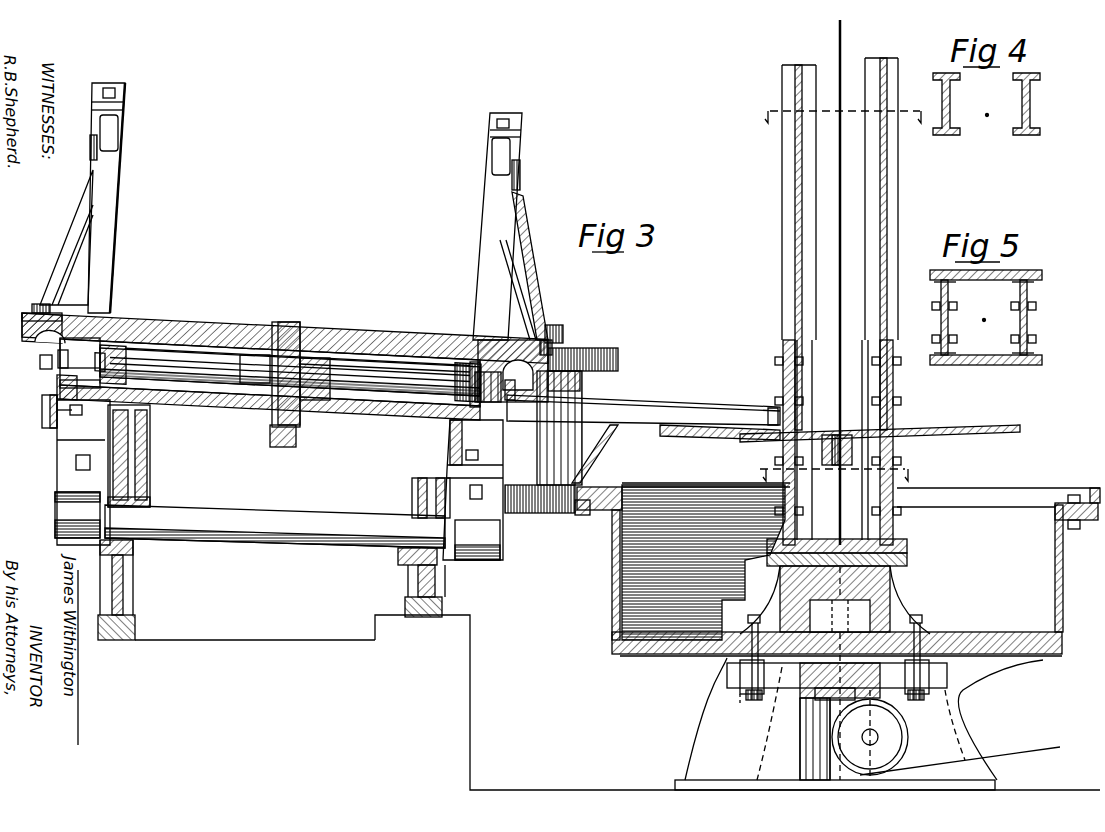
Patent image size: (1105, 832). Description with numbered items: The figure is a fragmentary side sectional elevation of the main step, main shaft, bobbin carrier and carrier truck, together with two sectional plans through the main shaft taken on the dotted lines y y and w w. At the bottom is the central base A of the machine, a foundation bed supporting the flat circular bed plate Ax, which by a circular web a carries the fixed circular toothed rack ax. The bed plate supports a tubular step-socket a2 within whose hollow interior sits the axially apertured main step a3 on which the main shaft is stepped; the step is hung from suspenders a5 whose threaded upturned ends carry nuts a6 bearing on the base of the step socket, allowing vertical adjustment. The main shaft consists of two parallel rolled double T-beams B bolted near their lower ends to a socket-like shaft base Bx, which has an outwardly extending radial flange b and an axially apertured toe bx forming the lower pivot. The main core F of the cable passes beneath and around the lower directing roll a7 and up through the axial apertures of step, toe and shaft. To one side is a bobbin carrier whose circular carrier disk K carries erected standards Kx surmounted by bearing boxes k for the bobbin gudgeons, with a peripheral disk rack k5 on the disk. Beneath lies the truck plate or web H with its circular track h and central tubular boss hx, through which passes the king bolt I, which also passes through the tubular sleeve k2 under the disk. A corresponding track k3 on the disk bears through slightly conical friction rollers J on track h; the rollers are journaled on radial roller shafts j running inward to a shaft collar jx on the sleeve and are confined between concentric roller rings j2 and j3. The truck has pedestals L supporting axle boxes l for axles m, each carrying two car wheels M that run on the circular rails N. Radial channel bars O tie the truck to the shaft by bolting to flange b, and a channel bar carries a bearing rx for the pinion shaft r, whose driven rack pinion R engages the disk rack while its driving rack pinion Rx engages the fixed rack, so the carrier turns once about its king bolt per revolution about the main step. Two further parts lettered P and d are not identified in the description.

In FIG. 3, the carrier disk K is at (100, 195).
In FIG. 3, the standards Kx is at (485, 222).
In FIG. 3, the bearing boxes k is at (116, 92).
In FIG. 3, the tubular sleeve k2 is at (330, 345).
In FIG. 3, the circular track k3 is at (58, 357).
In FIG. 3, the disk rack k5 is at (30, 318).
In FIG. 3, the radial roller shafts j is at (140, 350).
In FIG. 3, the roller ring j2 is at (108, 356).
In FIG. 3, the roller ring j3 is at (40, 362).
In FIG. 3, the shaft collar jx is at (250, 385).
In FIG. 3, the friction rollers J is at (65, 368).
In FIG. 3, the king bolt I is at (290, 325).
In FIG. 3, the truck plate or web H is at (318, 400).
In FIG. 3, the circular track h is at (470, 405).
In FIG. 3, the tubular boss or center casting hx is at (255, 405).
In FIG. 3, the plate P is at (42, 412).
In FIG. 3, the pedestals L is at (503, 520).
In FIG. 3, the axle boxes l is at (60, 505).
In FIG. 3, the axles m is at (278, 518).
In FIG. 3, the car wheels M is at (122, 572).
In FIG. 3, the circular rails N is at (135, 632).
In FIG. 3, the driven rack pinion R is at (615, 352).
In FIG. 3, the driving rack pinion Rx is at (540, 513).
In FIG. 3, the pinion shaft r is at (572, 515).
In FIG. 3, the bearing rx is at (598, 452).
In FIG. 3, the channel bars O is at (675, 403).
In FIG. 3, the fixed circular toothed rack ax is at (600, 512).
In FIG. 3, the double T-beams or girders B is at (795, 238).
In FIG. 4, the double T-beams or girders B is at (951, 105).
In FIG. 5, the double T-beams or girders B is at (949, 320).
In FIG. 3, the shaft base Bx is at (783, 374).
In FIG. 5, the shaft base Bx is at (1036, 315).
In FIG. 3, the main core of the cable F is at (840, 45).
In FIG. 4, the main core of the cable F is at (986, 118).
In FIG. 5, the main core of the cable F is at (983, 323).
In FIG. 3, the dotted line y y is at (844, 108).
In FIG. 3, the dotted line w w is at (834, 465).
In FIG. 3, the radial flange b is at (1020, 430).
In FIG. 3, the toe bx is at (895, 575).
In FIG. 3, the circular web a is at (1063, 570).
In FIG. 3, the tubular step-socket a2 is at (900, 600).
In FIG. 3, the main step a3 is at (840, 627).
In FIG. 3, the suspenders a5 is at (930, 698).
In FIG. 3, the nuts a6 is at (755, 622).
In FIG. 3, the lower directing roll a7 is at (870, 737).
In FIG. 3, the bracket bar d is at (800, 672).
In FIG. 3, the central base A is at (777, 719).
In FIG. 3, the bed plate Ax is at (1002, 665).